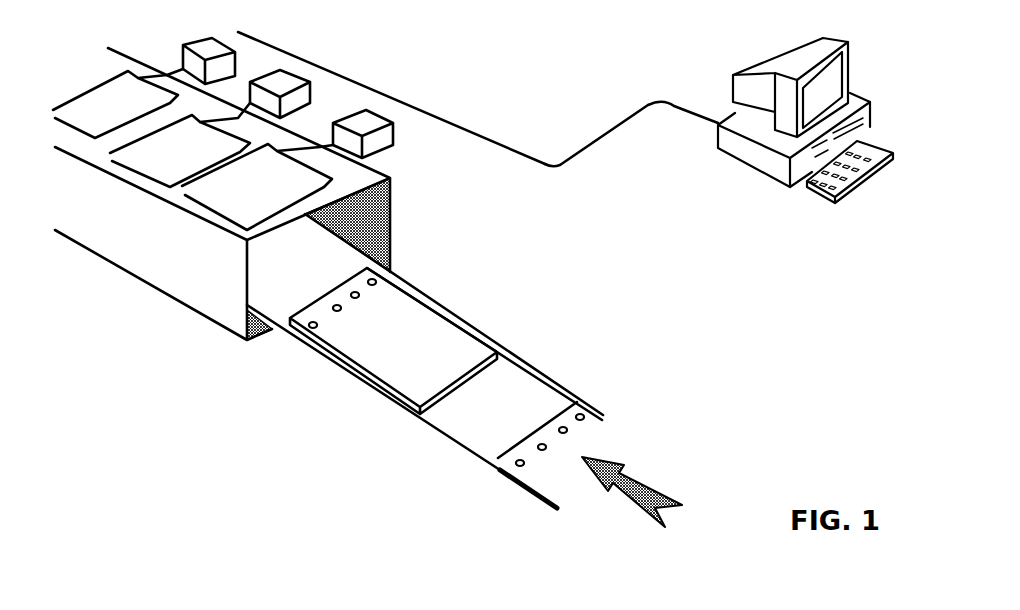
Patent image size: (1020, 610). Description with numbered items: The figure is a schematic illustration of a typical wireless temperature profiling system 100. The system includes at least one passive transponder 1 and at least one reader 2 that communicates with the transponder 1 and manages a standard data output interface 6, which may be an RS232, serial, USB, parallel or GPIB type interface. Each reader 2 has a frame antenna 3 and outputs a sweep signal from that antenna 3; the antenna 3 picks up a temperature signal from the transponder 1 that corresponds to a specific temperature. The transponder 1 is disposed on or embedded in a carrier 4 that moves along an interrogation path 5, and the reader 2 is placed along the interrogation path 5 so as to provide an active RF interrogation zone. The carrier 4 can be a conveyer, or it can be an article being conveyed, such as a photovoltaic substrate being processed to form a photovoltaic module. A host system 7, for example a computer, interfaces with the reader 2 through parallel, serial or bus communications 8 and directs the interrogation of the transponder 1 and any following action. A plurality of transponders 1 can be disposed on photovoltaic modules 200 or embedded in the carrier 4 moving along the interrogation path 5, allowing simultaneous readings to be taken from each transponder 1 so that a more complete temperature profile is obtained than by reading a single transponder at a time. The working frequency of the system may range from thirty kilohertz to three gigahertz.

The passive transponder 1 is at (505, 462).
The reader 2 is at (375, 120).
The frame antenna 3 is at (80, 133).
The carrier 4 is at (522, 377).
The interrogation path 5 is at (232, 320).
The standard data output interface 6 is at (397, 135).
The host system 7 is at (742, 153).
The parallel, serial or bus communications 8 is at (587, 142).
The wireless temperature profiling system 100 is at (206, 444).
The photovoltaic module 200 is at (540, 480).